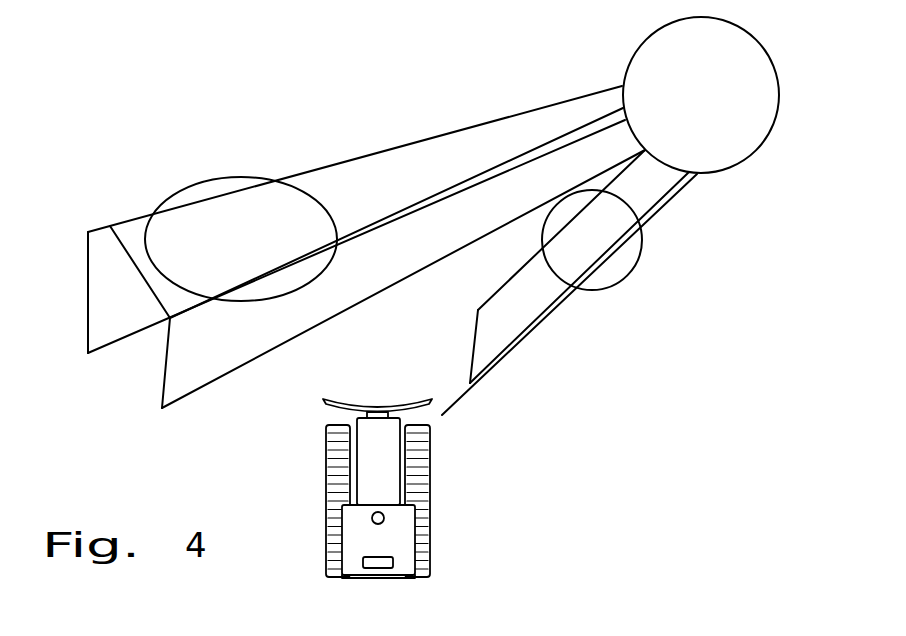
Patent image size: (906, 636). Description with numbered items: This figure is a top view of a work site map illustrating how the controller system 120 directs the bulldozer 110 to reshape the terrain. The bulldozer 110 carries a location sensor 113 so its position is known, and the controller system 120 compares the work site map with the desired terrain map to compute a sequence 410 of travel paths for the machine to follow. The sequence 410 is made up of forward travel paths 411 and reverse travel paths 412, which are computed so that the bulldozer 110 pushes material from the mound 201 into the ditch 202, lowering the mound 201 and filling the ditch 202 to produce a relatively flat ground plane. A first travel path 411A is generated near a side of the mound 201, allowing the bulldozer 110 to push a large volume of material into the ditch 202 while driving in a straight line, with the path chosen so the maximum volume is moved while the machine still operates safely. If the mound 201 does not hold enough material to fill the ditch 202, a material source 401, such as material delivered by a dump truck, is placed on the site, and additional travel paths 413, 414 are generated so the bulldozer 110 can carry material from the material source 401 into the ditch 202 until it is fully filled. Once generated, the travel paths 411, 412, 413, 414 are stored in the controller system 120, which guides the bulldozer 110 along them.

The bulldozer 110 is at (405, 488).
The location sensor 113 is at (385, 522).
The controller system 120 is at (365, 555).
The mound 201 is at (643, 268).
The ditch 202 is at (740, 165).
The material source 401 is at (205, 173).
The sequence of travel paths 410 is at (546, 301).
The forward travel paths 411 is at (502, 288).
The first travel path 411A is at (452, 410).
The reverse travel paths 412 is at (472, 355).
The additional travel path 413 is at (110, 343).
The additional travel path 414 is at (172, 321).